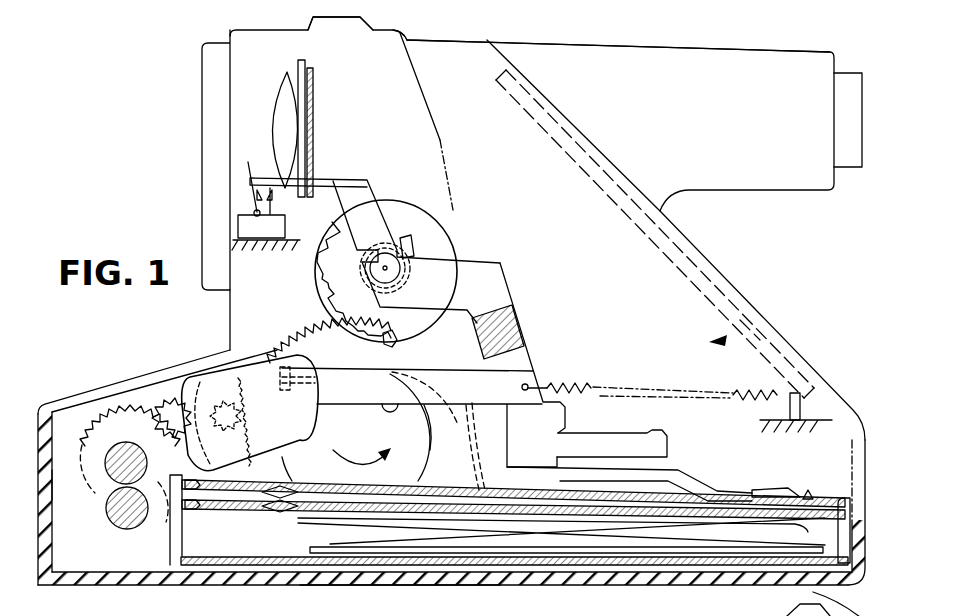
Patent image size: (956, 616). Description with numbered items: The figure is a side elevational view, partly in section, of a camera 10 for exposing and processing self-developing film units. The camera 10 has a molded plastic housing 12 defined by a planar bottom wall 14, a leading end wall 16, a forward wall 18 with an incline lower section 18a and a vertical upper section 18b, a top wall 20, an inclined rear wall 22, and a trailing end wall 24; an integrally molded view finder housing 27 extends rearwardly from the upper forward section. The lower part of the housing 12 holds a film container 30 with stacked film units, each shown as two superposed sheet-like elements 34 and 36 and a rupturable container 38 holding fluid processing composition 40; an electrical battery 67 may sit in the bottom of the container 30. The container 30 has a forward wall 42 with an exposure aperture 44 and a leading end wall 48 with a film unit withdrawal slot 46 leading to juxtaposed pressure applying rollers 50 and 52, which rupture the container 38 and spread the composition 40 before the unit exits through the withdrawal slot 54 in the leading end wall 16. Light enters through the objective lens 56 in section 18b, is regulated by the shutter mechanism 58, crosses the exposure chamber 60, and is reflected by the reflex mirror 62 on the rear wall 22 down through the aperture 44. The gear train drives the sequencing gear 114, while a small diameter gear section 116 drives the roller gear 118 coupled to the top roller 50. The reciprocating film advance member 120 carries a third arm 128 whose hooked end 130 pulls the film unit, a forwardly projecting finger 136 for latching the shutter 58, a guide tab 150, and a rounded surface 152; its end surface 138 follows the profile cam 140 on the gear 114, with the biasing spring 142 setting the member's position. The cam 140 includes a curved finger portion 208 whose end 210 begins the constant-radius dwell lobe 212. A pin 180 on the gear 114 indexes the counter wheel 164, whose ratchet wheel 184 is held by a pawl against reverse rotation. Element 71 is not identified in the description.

The camera 10 is at (800, 41).
The housing 12 is at (212, 29).
The planar bottom wall 14 is at (400, 586).
The leading end wall 16 is at (44, 404).
The forward wall 18 is at (190, 343).
The incline lower section 18a is at (116, 385).
The vertical upper section 18b is at (228, 314).
The top wall 20 is at (395, 33).
The inclined rear wall 22 is at (706, 262).
The trailing end wall 24 is at (870, 507).
The view finder housing 27 is at (682, 47).
The film container 30 is at (277, 515).
The sheet-like element 34 is at (402, 488).
The sheet-like element 36 is at (470, 485).
The rupturable container 38 is at (214, 505).
The fluid processing composition 40 is at (230, 506).
The forward wall 42 is at (826, 500).
The exposure aperture 44 is at (800, 492).
The film unit withdrawal slot 46 is at (165, 508).
The leading end wall 48 is at (170, 548).
The pressure applying roller 50 is at (106, 460).
The pressure applying roller 52 is at (110, 520).
The withdrawal slot 54 is at (54, 484).
The objective lens 56 is at (281, 95).
The shutter mechanism 58 is at (313, 93).
The exposure chamber 60 is at (750, 322).
The reflex mirror 62 is at (625, 226).
The electrical battery 67 is at (310, 562).
The leaf spring 71 is at (550, 556).
The sequencing gear 114 is at (288, 345).
The small diameter gear section 116 is at (153, 410).
The roller gear 118 is at (96, 423).
The film advance member 120 is at (540, 360).
The third arm 128 is at (698, 482).
The hooked end 130 is at (765, 492).
The forwardly projecting finger 136 is at (325, 178).
The end surface 138 is at (308, 383).
The profile cam 140 is at (303, 465).
The biasing spring 142 is at (585, 387).
The guide tab 150 is at (746, 604).
The rounded surface 152 is at (662, 431).
The counter wheel 164 is at (446, 232).
The pin 180 is at (413, 337).
The ratchet wheel 184 is at (318, 288).
The curved finger portion 208 is at (412, 389).
The end 210 is at (390, 402).
The dwell lobe 212 is at (430, 440).